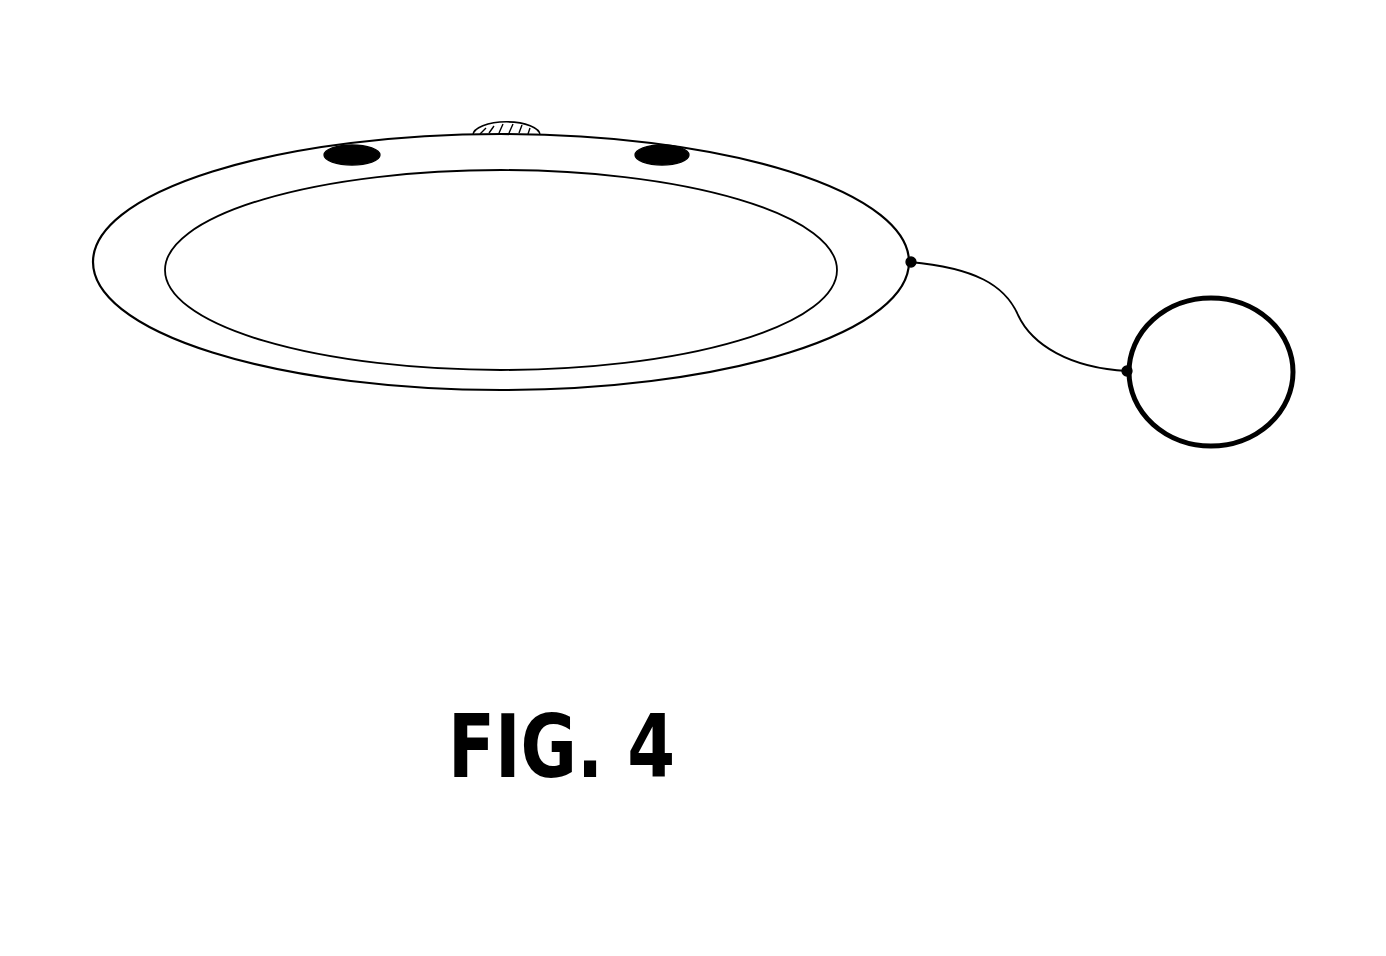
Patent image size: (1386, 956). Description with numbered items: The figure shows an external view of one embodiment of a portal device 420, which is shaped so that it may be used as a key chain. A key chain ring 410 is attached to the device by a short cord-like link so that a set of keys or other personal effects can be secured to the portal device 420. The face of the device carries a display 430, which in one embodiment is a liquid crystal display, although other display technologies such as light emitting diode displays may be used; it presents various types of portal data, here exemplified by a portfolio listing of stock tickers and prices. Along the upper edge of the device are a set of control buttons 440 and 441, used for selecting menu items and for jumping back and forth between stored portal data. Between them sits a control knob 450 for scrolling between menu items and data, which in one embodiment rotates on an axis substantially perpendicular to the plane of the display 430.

The key chain ring 410 is at (1260, 433).
The portal device 420 is at (192, 338).
The display 430 is at (718, 302).
The control button 440 is at (347, 145).
The control button 441 is at (670, 147).
The control knob 450 is at (495, 123).